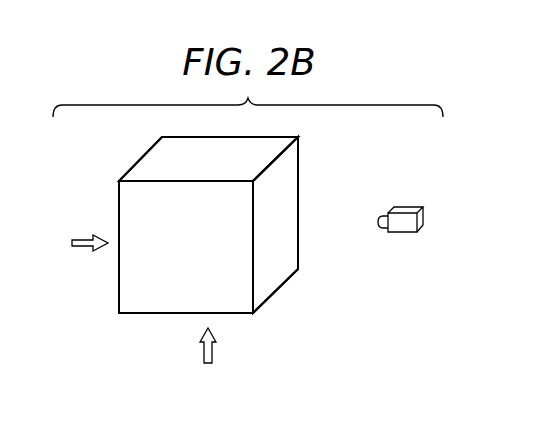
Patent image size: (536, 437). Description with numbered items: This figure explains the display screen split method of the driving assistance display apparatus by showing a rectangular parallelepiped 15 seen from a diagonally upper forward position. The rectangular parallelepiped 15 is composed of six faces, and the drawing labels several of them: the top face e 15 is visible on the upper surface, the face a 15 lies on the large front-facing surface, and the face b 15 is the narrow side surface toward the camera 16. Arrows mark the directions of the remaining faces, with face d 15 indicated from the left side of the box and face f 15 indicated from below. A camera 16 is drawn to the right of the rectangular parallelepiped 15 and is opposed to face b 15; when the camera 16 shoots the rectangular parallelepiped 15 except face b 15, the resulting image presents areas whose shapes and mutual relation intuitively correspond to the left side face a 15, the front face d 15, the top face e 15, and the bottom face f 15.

The rectangular parallelepiped 15 is at (226, 226).
The camera 16 is at (403, 205).
The face a is at (180, 306).
The face b is at (271, 272).
The face e is at (194, 176).
The face d is at (80, 245).
The face f is at (208, 361).